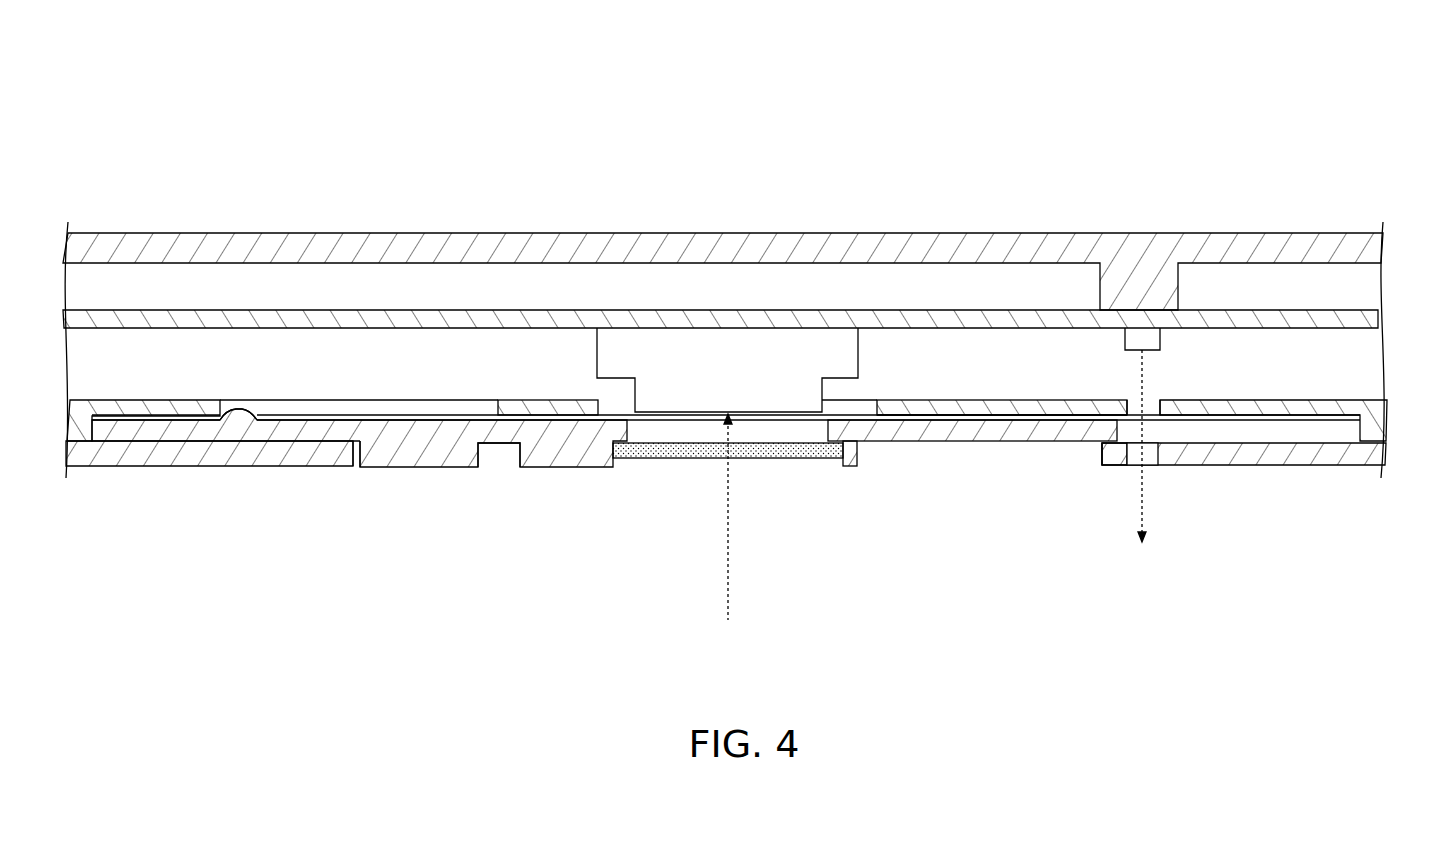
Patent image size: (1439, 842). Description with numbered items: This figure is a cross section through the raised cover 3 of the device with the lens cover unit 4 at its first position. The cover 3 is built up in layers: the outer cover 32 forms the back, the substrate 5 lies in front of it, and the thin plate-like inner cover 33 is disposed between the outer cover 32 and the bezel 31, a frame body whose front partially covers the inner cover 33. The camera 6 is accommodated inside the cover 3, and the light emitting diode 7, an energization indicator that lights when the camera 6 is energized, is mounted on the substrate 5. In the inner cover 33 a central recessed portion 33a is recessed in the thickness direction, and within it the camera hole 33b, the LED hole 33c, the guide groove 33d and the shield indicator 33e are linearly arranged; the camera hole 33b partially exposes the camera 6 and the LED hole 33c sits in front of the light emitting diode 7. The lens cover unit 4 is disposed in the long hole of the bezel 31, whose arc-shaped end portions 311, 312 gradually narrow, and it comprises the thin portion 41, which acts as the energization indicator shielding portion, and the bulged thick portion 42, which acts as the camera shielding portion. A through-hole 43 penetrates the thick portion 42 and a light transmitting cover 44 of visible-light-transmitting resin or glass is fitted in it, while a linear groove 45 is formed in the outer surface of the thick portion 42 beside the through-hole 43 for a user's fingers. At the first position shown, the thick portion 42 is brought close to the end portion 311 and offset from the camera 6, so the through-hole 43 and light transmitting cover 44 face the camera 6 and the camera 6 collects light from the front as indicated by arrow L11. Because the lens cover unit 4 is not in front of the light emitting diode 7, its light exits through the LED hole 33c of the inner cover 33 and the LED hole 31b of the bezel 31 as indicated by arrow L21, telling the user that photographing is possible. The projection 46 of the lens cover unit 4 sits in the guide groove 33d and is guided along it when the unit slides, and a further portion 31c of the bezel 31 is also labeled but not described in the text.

The cover 3 is at (177, 171).
The outer cover 32 is at (1330, 232).
The substrate 5 is at (952, 327).
The camera 6 is at (597, 352).
The light emitting diode 7 is at (1163, 340).
The inner cover 33 is at (748, 433).
The recessed portion 33a is at (1235, 408).
The camera hole 33b is at (872, 400).
The LED hole 33c is at (1130, 396).
The guide groove 33d is at (372, 404).
The shield indicator 33e is at (995, 413).
The lens cover unit 4 is at (604, 467).
The thin portion 41 is at (300, 446).
The thick portion 42 is at (402, 468).
The through-hole 43 is at (842, 466).
The light transmitting cover 44 is at (660, 461).
The groove 45 is at (485, 447).
The projection 46 is at (248, 410).
The bezel 31 is at (727, 514).
The end portion 311 is at (353, 467).
The end portion 312 is at (1102, 452).
The LED hole 31b is at (1155, 467).
The housing end portion 31c is at (1100, 465).
The arrow L11 is at (727, 550).
The arrow L21 is at (1135, 497).